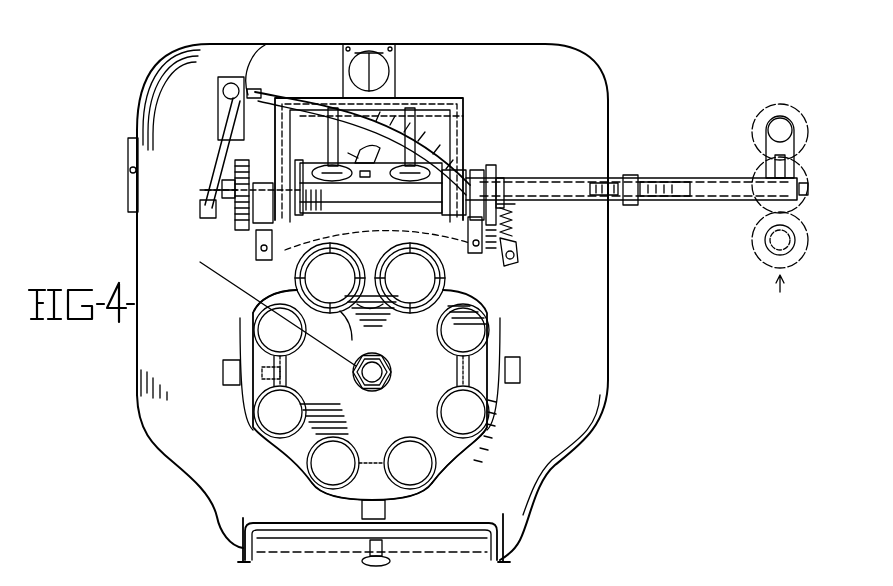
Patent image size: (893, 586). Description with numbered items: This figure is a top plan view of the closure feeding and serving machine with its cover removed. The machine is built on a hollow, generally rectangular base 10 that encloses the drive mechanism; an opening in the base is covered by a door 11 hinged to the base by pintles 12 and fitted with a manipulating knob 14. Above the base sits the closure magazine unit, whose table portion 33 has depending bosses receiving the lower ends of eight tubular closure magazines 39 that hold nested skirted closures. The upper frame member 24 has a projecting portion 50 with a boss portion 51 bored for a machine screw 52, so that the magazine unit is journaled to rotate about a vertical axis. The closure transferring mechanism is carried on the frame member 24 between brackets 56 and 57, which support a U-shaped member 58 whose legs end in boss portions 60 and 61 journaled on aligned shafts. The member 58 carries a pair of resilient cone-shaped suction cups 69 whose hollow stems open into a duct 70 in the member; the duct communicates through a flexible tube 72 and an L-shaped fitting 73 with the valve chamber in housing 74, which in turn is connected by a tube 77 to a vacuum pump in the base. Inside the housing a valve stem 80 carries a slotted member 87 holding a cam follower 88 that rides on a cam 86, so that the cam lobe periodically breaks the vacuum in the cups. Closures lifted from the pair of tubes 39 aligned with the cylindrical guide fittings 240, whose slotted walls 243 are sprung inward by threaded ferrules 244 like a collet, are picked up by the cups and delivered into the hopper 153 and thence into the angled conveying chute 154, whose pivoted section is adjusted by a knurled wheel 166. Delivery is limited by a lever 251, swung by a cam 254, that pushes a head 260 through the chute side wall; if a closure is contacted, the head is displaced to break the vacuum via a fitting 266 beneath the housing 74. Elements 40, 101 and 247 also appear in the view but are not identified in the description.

The hollow base 10 is at (575, 70).
The closure or door 11 is at (470, 560).
The pintles 12 is at (240, 553).
The manipulating knob 14 is at (388, 565).
The upper frame member 24 is at (292, 288).
The table portion 33 is at (450, 478).
The closure magazines 39 is at (489, 312).
The plate side rim 40 is at (482, 452).
The projecting portion 50 is at (383, 375).
The boss portion 51 is at (370, 390).
The machine screw 52 is at (386, 380).
The bracket 56 is at (490, 175).
The bracket 57 is at (302, 232).
The U-shaped member 58 is at (425, 100).
The boss portion 60 is at (458, 220).
The boss portion 61 is at (274, 232).
The closure engaging cups 69 is at (410, 180).
The manifold or duct 70 is at (398, 80).
The flexible tube 72 is at (245, 105).
The L-shaped fitting 73 is at (218, 92).
The housing 74 is at (262, 120).
The tube 77 is at (262, 95).
The valve stem or plunger 80 is at (240, 165).
The cam 86 is at (222, 188).
The slotted member 87 is at (218, 160).
The cam follower 88 is at (235, 170).
The roller assembly 101 is at (766, 142).
The hopper 153 is at (477, 170).
The closure conveying chute 154 is at (585, 200).
The knurled adjusting wheel 166 is at (632, 176).
The cylindrical fittings 240 is at (253, 313).
The spaced slots 243 is at (390, 318).
The ferrules 244 is at (303, 307).
The lever 247 is at (390, 217).
The lever 251 is at (498, 285).
The cam member 254 is at (502, 178).
The head 260 is at (520, 222).
The fitting 266 is at (250, 95).